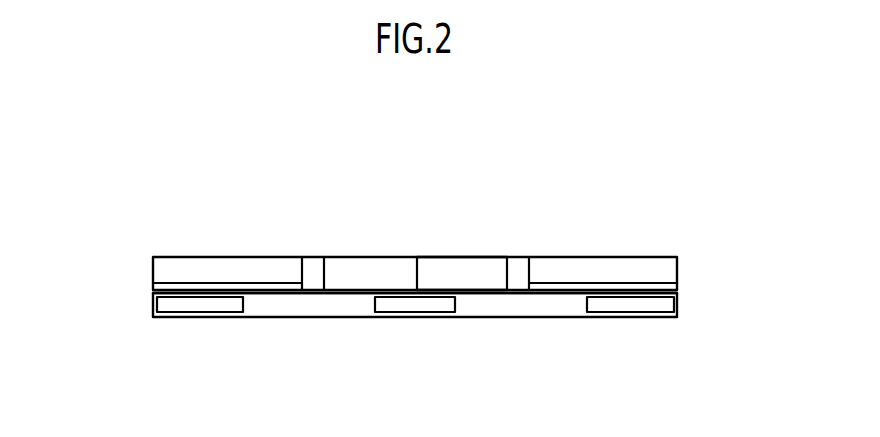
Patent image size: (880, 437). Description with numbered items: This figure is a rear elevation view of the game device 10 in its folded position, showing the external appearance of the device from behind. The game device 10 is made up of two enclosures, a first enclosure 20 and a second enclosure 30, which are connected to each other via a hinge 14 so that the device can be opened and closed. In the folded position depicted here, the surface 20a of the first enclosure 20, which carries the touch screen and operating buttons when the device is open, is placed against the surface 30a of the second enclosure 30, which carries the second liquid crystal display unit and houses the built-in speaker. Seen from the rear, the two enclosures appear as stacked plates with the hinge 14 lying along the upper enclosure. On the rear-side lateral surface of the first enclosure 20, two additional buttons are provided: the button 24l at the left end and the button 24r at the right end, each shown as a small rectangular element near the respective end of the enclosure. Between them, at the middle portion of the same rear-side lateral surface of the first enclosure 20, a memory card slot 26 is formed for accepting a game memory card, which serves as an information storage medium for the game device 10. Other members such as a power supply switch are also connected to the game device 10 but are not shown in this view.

The game device 10 is at (605, 200).
The hinge 14 is at (453, 258).
The first enclosure 20 is at (163, 318).
The surface of the first enclosure 20a is at (677, 290).
The button 24r is at (220, 303).
The button 24l is at (632, 303).
The memory card slot 26 is at (415, 313).
The second enclosure 30 is at (163, 257).
The surface of the second enclosure 30a is at (153, 288).